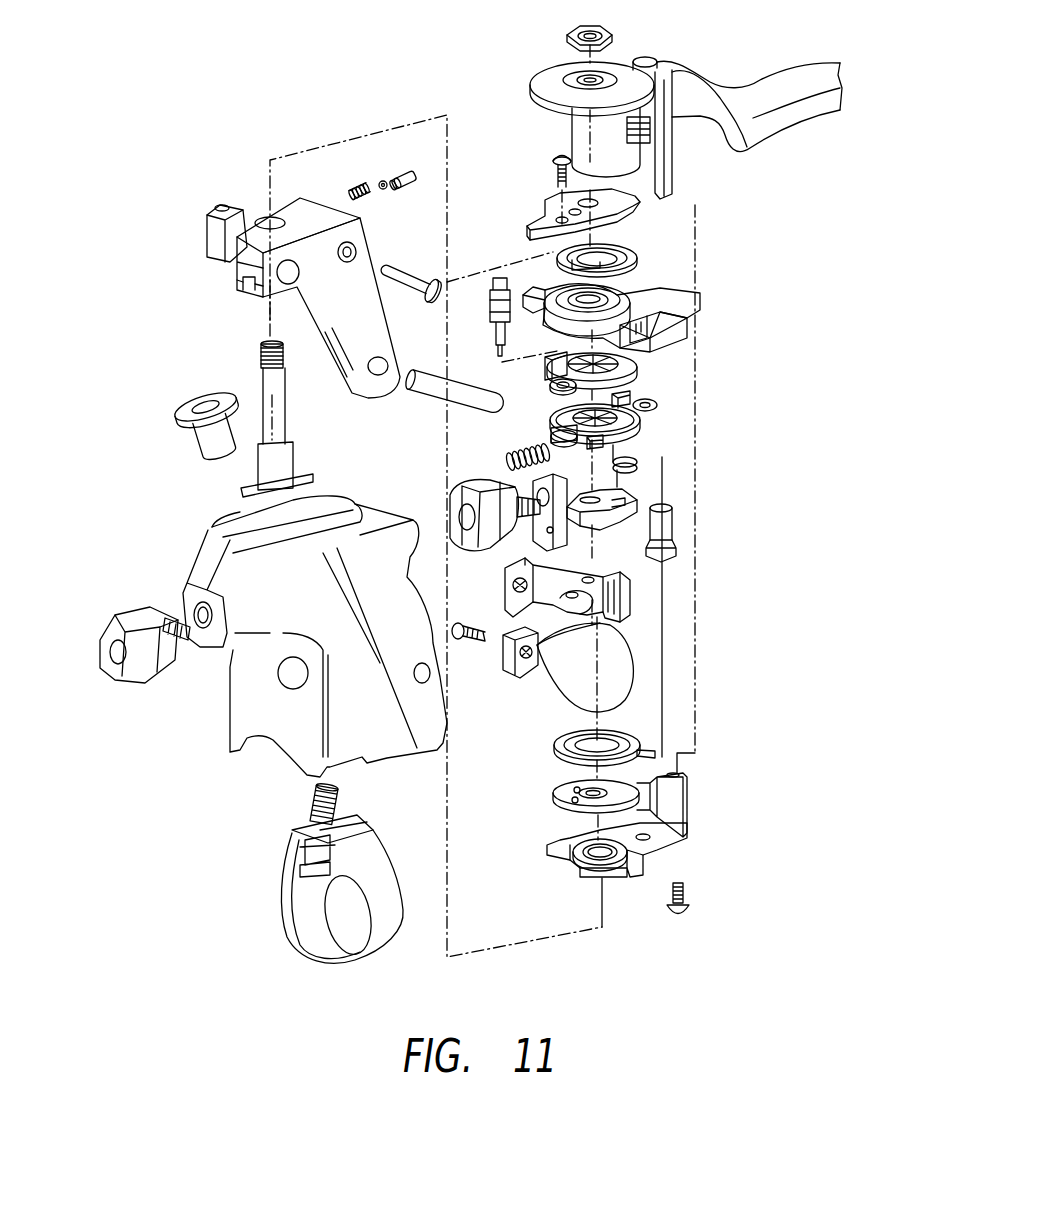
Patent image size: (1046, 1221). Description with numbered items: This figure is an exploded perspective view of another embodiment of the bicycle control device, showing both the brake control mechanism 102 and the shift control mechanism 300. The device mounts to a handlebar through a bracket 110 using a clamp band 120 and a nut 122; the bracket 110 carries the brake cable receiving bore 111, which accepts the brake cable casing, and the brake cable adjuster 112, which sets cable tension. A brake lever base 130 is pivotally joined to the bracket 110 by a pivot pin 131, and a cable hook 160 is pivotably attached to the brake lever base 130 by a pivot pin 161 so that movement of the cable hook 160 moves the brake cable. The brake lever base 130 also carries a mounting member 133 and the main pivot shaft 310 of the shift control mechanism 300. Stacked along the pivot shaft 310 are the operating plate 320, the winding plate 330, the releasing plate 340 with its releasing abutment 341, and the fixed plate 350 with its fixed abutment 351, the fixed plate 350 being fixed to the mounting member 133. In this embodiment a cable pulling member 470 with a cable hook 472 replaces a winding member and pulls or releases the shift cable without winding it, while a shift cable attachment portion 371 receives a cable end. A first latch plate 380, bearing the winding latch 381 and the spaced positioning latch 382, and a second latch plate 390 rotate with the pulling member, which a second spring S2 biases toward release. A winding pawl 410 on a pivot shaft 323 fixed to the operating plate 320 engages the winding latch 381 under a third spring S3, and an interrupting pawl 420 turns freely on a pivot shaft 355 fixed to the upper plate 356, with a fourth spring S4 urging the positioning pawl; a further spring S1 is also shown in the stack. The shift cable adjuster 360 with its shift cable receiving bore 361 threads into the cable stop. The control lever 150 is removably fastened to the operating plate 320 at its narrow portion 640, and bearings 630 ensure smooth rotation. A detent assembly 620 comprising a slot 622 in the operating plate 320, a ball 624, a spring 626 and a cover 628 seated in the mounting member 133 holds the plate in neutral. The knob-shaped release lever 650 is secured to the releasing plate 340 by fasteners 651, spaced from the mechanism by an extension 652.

The brake control mechanism 102 is at (147, 245).
The bracket 110 is at (237, 723).
The brake cable receiving bore 111 is at (190, 617).
The brake cable adjuster 112 is at (127, 617).
The clamp band 120 is at (366, 958).
The nut 122 is at (207, 437).
The brake lever base 130 is at (323, 213).
The pivot pin 131 is at (440, 395).
The mounting member 133 is at (207, 232).
The control lever 150 is at (822, 93).
The cable hook 160 is at (227, 293).
The pivot pin 161 is at (413, 275).
The shift control mechanism 300 is at (808, 190).
The pivot shaft 310 is at (263, 378).
The operating plate 320 is at (680, 835).
The pivot shaft 323 is at (677, 537).
The winding plate 330 is at (620, 790).
The releasing plate 340 is at (630, 587).
The releasing abutment 341 is at (655, 600).
The fixed plate 350 is at (650, 490).
The fixed abutment 351 is at (677, 557).
The pivot shaft 355 is at (493, 303).
The upper plate 356 is at (633, 200).
The shift cable adjuster 360 is at (497, 545).
The shift cable receiving bore 361 is at (537, 535).
The shift cable attachment portion 371 is at (555, 372).
The first latch plate 380 is at (643, 433).
The winding latch 381 is at (643, 418).
The positioning latch 382 is at (555, 428).
The second latch plate 390 is at (637, 362).
The winding pawl 410 is at (660, 407).
The interrupting pawl 420 is at (560, 412).
The cable pulling member 470 is at (633, 297).
The cable hook 472 is at (677, 340).
The detent assembly 620 is at (449, 168).
The slot 622 is at (565, 868).
The ball 624 is at (383, 180).
The spring 626 is at (352, 183).
The cover 628 is at (408, 177).
The bearings 630 is at (607, 78).
The narrow portion 640 is at (693, 100).
The release lever 650 is at (623, 670).
The fasteners 651 is at (470, 642).
The extension 652 is at (530, 620).
The spring S1 is at (637, 733).
The second spring S2 is at (640, 255).
The third spring S3 is at (637, 462).
The fourth spring S4 is at (508, 457).